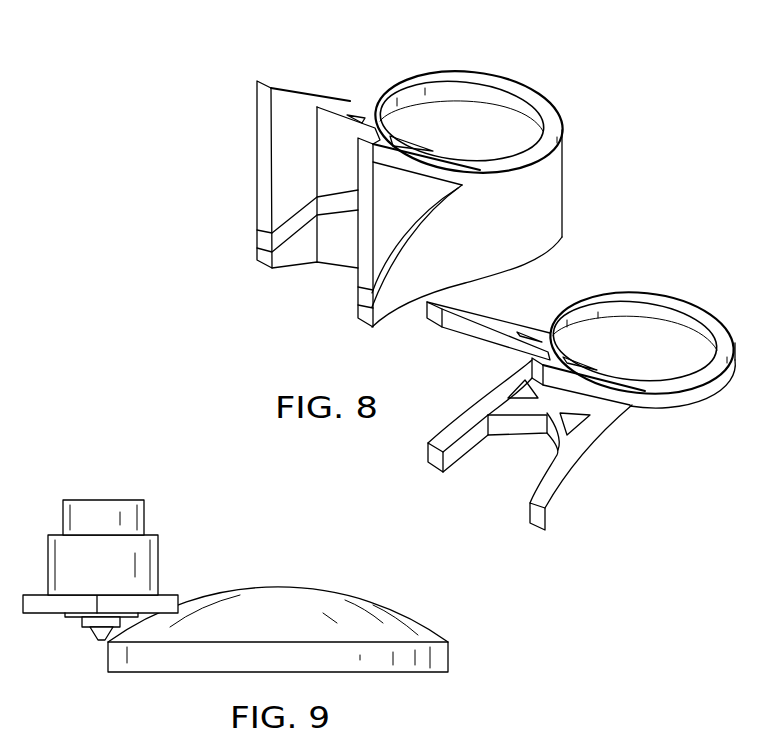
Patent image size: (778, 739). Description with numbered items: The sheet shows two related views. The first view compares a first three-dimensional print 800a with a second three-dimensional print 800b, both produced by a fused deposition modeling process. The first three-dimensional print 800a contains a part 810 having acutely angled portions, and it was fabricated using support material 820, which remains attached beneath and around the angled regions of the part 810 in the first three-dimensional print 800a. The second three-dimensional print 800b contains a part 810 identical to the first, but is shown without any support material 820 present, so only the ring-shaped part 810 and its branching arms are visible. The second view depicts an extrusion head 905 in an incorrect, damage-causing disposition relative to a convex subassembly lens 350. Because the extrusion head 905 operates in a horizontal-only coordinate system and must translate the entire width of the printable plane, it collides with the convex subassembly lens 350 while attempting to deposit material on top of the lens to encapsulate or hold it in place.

In FIG. 8, the first 3D print 800a is at (538, 62).
In FIG. 8, the second 3D print 800b is at (702, 281).
In FIG. 8, the part 810 is at (467, 75).
In FIG. 8, the support material 820 is at (416, 117).
In FIG. 9, the extrusion head 905 is at (98, 500).
In FIG. 9, the convex subassembly lens 350 is at (278, 587).